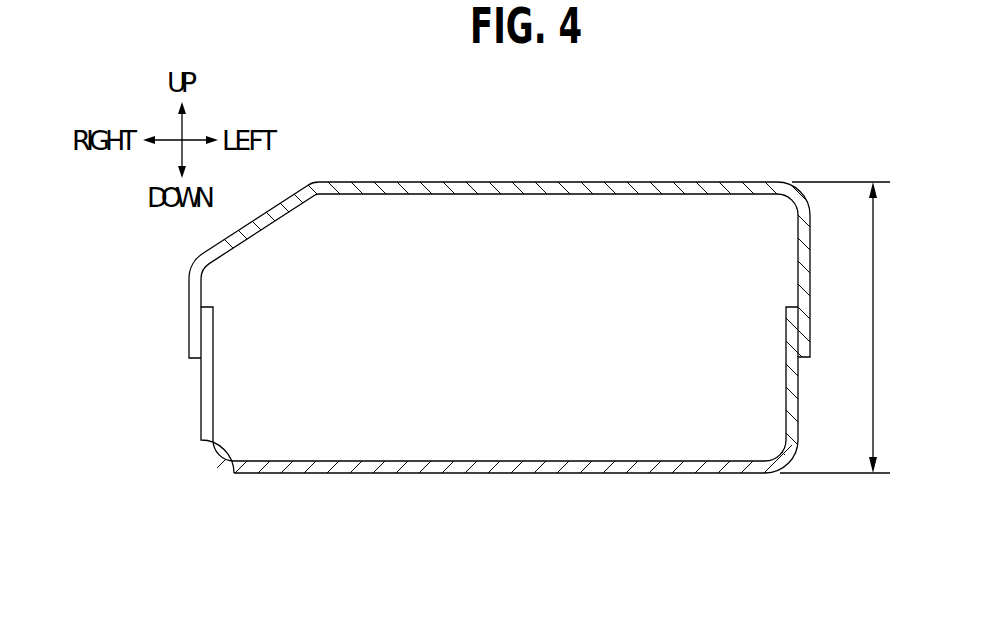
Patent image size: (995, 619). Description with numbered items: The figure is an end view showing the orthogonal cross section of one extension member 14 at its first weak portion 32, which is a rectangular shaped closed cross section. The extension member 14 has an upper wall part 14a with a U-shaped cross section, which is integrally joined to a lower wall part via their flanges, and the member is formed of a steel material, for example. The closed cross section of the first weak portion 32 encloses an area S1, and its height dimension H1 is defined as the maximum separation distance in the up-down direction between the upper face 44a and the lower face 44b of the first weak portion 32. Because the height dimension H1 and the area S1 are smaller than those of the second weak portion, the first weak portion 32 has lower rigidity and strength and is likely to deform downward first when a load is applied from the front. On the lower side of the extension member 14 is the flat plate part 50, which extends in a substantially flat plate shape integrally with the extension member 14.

The extension member 14 is at (577, 308).
The first weak portion 32 is at (577, 308).
The upper wall part 14a is at (372, 180).
The upper face 44a is at (565, 180).
The lower face 44b is at (568, 474).
The flat plate part 50 is at (377, 475).
The area of the closed cross section of the first weak portion S1 is at (534, 340).
The height dimension of the orthogonal cross section of the first weak portion H1 is at (873, 330).